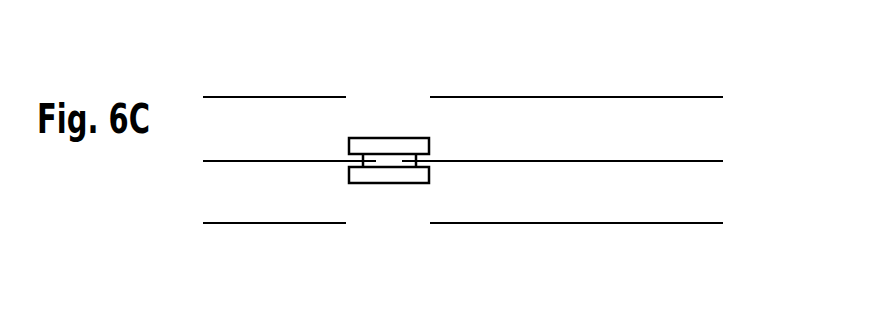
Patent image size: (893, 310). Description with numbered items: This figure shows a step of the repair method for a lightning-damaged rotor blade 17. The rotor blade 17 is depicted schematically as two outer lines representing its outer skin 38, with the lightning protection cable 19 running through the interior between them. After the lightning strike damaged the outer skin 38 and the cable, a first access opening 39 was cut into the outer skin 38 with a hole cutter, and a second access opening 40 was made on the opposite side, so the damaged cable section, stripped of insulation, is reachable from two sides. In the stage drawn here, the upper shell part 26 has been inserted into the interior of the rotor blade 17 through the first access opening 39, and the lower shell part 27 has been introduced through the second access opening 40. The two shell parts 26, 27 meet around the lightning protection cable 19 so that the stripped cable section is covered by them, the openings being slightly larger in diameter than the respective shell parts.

The rotor blade 17 is at (480, 150).
The lightning protection cable 19 is at (593, 160).
The upper shell part 26 is at (398, 138).
The lower shell part 27 is at (398, 183).
The outer skin 38 is at (648, 97).
The first access opening 39 is at (372, 110).
The second access opening 40 is at (373, 210).